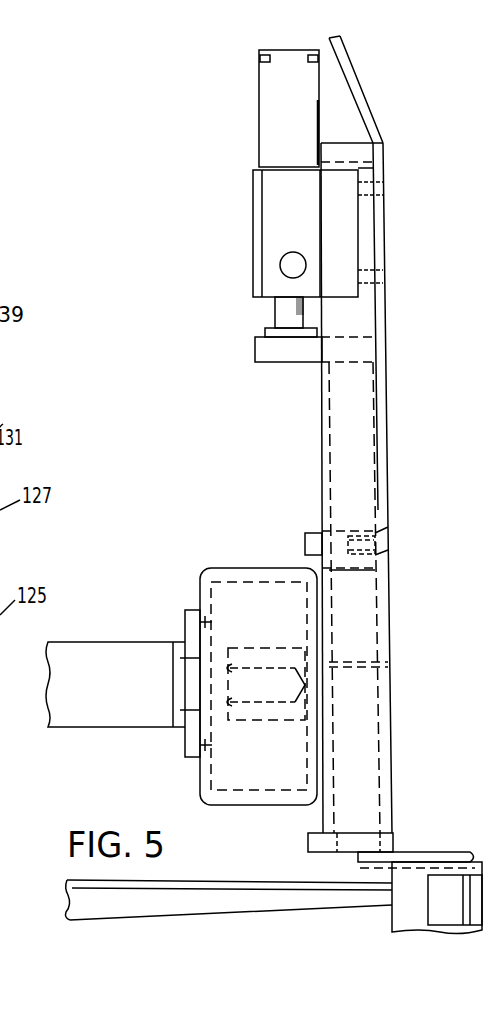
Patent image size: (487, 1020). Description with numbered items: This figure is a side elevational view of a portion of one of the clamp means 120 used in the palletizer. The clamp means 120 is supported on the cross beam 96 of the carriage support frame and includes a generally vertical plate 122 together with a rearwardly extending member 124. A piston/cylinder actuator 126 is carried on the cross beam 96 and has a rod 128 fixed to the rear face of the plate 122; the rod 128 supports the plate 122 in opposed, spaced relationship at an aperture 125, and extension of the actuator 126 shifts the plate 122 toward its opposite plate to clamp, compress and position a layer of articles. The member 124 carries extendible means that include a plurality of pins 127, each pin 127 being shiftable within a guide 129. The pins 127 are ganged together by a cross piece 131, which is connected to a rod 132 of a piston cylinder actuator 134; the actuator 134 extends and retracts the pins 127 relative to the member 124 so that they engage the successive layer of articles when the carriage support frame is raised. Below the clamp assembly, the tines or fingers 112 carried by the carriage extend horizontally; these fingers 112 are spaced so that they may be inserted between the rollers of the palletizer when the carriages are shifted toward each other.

The cross beam 96 is at (233, 562).
The tines or fingers 112 is at (280, 880).
The clamp means 120 is at (392, 488).
The vertical plate 122 is at (388, 376).
The rearwardly extending member 124 is at (348, 153).
The aperture 125 is at (355, 678).
The piston/cylinder actuator 126 is at (160, 630).
The pin 127 is at (343, 413).
The rod 128 is at (185, 610).
The guide 129 is at (0, 548).
The cross piece 131 is at (288, 352).
The rod 132 is at (275, 326).
The piston cylinder actuator 134 is at (253, 160).